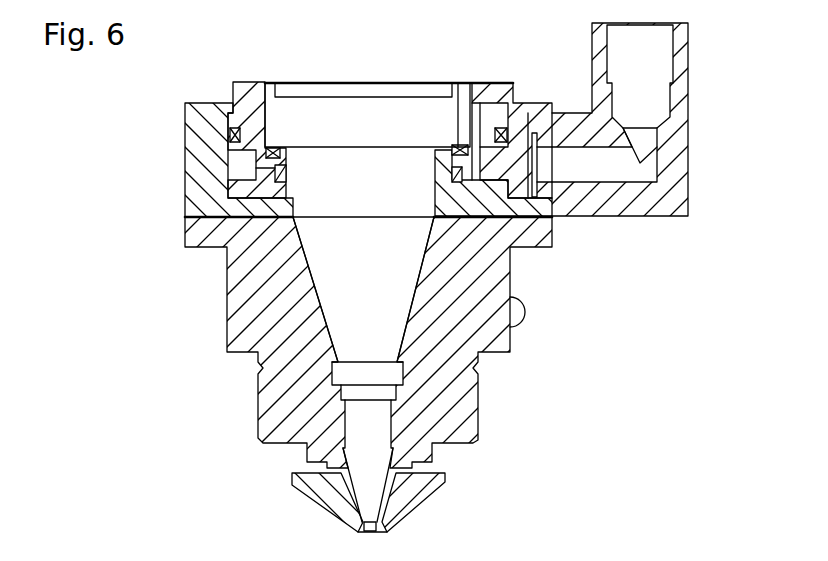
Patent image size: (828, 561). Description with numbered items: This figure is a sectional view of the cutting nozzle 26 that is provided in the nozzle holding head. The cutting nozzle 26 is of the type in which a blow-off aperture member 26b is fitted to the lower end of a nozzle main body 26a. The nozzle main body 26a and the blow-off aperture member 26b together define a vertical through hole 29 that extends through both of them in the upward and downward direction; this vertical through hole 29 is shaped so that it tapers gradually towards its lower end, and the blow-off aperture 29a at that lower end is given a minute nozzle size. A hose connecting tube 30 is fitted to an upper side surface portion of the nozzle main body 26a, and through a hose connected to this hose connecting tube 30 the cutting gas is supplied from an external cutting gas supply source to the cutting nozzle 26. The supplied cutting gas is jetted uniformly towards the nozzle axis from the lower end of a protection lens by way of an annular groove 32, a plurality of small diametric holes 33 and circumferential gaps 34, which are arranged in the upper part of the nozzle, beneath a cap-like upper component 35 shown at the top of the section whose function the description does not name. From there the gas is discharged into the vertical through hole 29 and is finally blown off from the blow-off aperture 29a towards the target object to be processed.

The cutting nozzle 26 is at (154, 240).
The nozzle main body 26a is at (226, 298).
The blow-off aperture member 26b is at (322, 504).
The vertical through hole 29 is at (389, 312).
The blow-off aperture 29a is at (376, 533).
The hose connecting tube 30 is at (615, 222).
The annular groove 32 is at (488, 153).
The small diametric holes 33 is at (473, 155).
The circumferential gaps 34 is at (447, 160).
The cap 35 is at (360, 123).